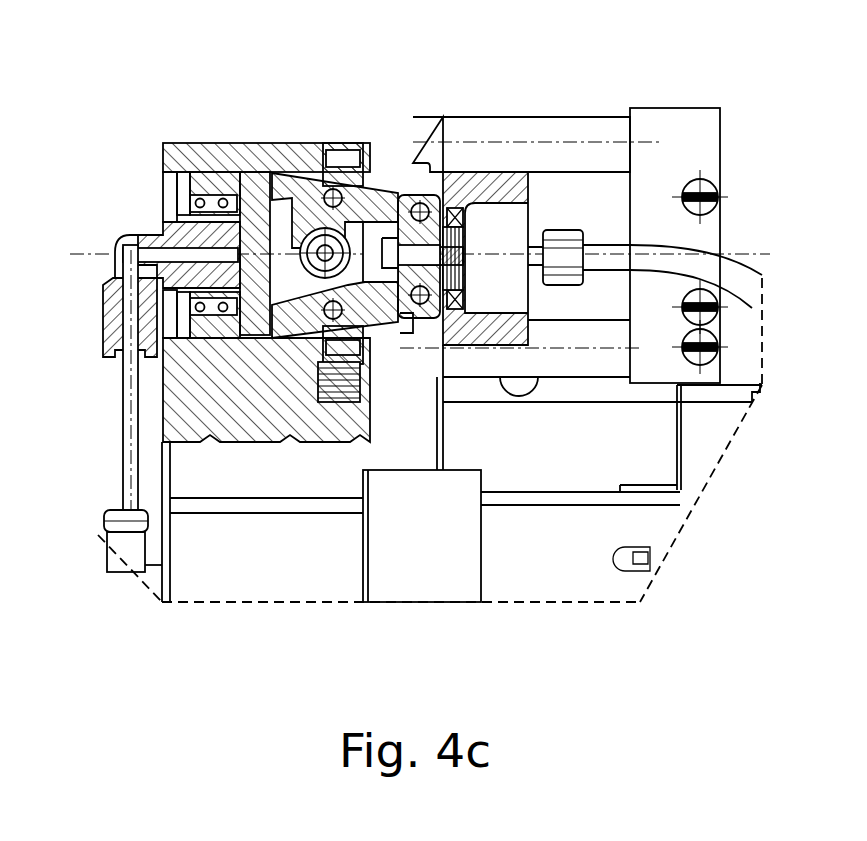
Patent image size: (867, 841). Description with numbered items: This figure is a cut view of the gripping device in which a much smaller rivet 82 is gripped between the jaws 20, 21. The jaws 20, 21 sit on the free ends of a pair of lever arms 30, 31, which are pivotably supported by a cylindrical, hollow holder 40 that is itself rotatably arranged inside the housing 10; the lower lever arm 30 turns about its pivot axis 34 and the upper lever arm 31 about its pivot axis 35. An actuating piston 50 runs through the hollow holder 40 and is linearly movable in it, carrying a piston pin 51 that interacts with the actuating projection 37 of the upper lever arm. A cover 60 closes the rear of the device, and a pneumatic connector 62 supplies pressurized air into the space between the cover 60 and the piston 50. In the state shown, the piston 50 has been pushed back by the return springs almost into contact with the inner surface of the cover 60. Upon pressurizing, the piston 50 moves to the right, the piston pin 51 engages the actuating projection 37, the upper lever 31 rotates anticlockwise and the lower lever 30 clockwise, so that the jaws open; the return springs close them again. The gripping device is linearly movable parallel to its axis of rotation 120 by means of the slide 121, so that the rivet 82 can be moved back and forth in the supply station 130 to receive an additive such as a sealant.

The housing 10 is at (165, 145).
The jaw 20 is at (440, 330).
The jaw 21 is at (428, 192).
The lever arm 30 is at (384, 322).
The lever arm 31 is at (275, 150).
The pivot axis of lever arm 34 is at (276, 420).
The pivot axis of lever arm 35 is at (338, 145).
The actuating projection of lever arm 37 is at (392, 145).
The holder 40 is at (175, 145).
The actuating piston 50 is at (215, 150).
The piston pin 51 is at (280, 150).
The cover 60 is at (172, 213).
The pneumatic connector 62 is at (108, 322).
The rivet 82 is at (450, 213).
The axis of rotation of gripping device 120 is at (226, 605).
The slide for linear movement of gripping device 121 is at (640, 448).
The supply station for additives 130 is at (529, 113).